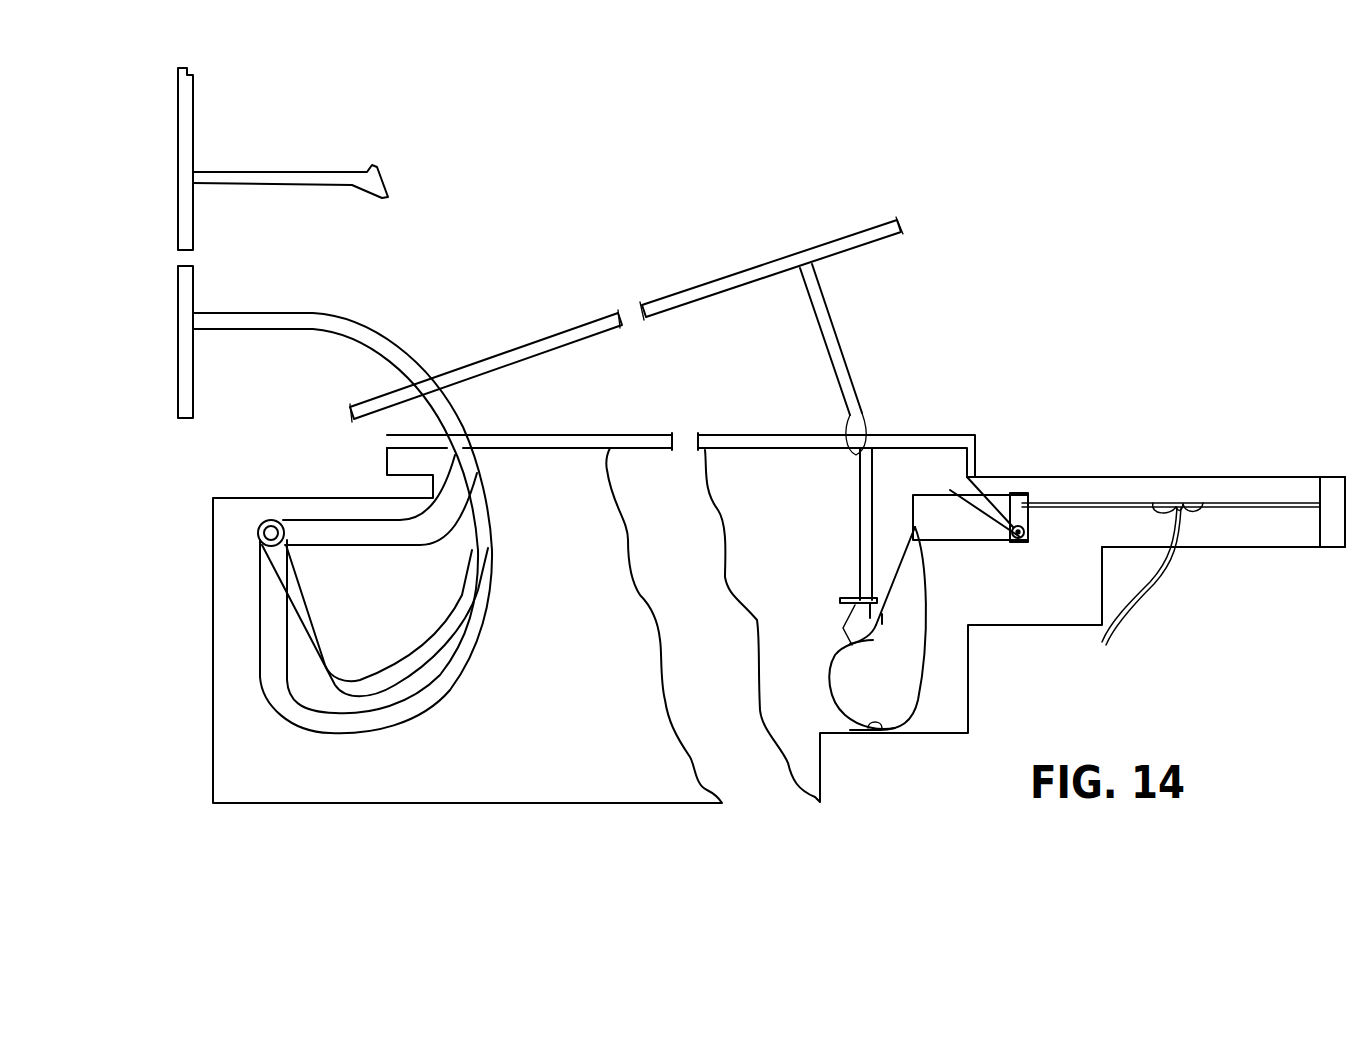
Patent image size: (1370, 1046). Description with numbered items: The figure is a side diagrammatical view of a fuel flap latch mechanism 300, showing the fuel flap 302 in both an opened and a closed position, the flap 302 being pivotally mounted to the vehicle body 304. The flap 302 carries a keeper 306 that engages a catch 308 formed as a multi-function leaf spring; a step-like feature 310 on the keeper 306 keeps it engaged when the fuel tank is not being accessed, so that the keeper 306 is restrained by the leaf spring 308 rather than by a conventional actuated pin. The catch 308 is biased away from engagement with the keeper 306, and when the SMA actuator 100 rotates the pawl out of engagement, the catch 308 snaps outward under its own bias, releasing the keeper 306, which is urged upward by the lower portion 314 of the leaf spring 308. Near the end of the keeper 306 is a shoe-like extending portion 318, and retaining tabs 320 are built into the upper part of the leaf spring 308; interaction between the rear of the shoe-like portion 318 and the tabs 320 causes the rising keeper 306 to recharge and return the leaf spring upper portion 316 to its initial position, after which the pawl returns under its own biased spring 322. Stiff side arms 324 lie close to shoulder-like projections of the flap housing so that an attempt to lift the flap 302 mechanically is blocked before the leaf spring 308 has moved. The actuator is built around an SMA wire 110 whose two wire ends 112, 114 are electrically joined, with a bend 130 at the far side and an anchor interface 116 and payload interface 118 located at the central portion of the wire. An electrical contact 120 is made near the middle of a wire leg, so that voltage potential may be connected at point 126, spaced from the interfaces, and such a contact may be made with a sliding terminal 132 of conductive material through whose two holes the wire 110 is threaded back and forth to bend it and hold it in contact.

The SMA actuator 100 is at (1160, 440).
The SMA wire 110 is at (1215, 515).
The SMA wire end 112 is at (1322, 505).
The SMA wire end 114 is at (1172, 457).
The anchor interface 116 is at (1350, 560).
The payload interface 118 is at (1010, 470).
The electrical contact 120 is at (1125, 612).
The point for voltage potential connection 126 is at (1185, 502).
The bend 130 is at (1020, 503).
The sliding terminal 132 is at (1158, 500).
The fuel flap latch mechanism 300 is at (1000, 432).
The fuel flap 302 is at (190, 130).
The vehicle body 304 is at (213, 780).
The keeper 306 is at (246, 185).
The catch 308 is at (930, 613).
The step-like feature 310 is at (880, 640).
The lower portion of the leaf spring 314 is at (935, 505).
The leaf spring upper portion 316 is at (900, 558).
The shoe-like extending portion 318 is at (843, 605).
The retaining tabs 320 is at (852, 597).
The biased spring 322 is at (1005, 542).
The stiff side arms 324 is at (882, 622).